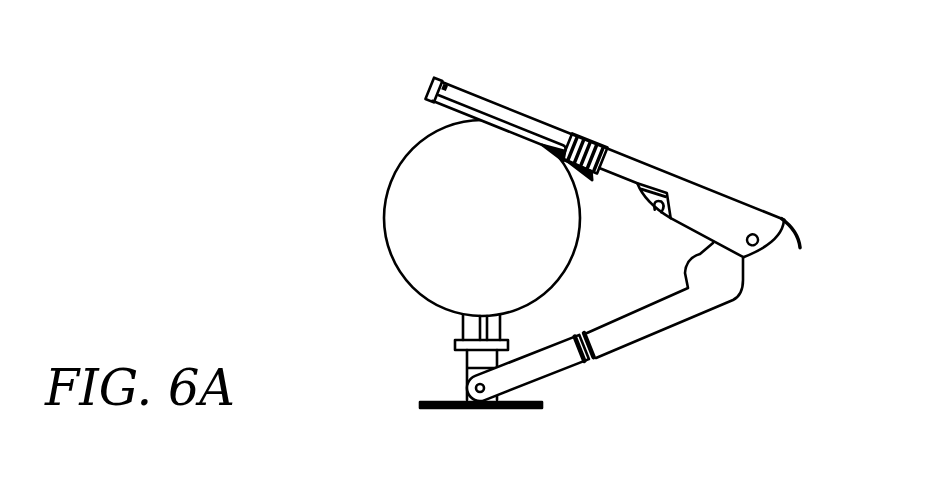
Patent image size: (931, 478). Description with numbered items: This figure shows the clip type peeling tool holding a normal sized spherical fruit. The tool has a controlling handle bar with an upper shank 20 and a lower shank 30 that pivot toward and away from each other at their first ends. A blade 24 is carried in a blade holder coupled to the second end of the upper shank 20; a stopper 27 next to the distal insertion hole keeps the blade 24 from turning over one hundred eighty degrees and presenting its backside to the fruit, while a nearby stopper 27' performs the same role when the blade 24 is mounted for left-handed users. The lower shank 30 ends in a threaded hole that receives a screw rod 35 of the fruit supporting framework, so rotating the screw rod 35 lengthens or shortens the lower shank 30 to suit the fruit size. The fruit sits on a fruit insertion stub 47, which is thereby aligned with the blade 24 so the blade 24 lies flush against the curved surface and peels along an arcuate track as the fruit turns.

The upper shank 20 is at (712, 198).
The blade 24 is at (497, 118).
The stopper 27 is at (412, 95).
The stopper 27' is at (428, 60).
The lower shank 30 is at (672, 315).
The screw rod 35 is at (595, 361).
The fruit insertion stub 47 is at (470, 328).